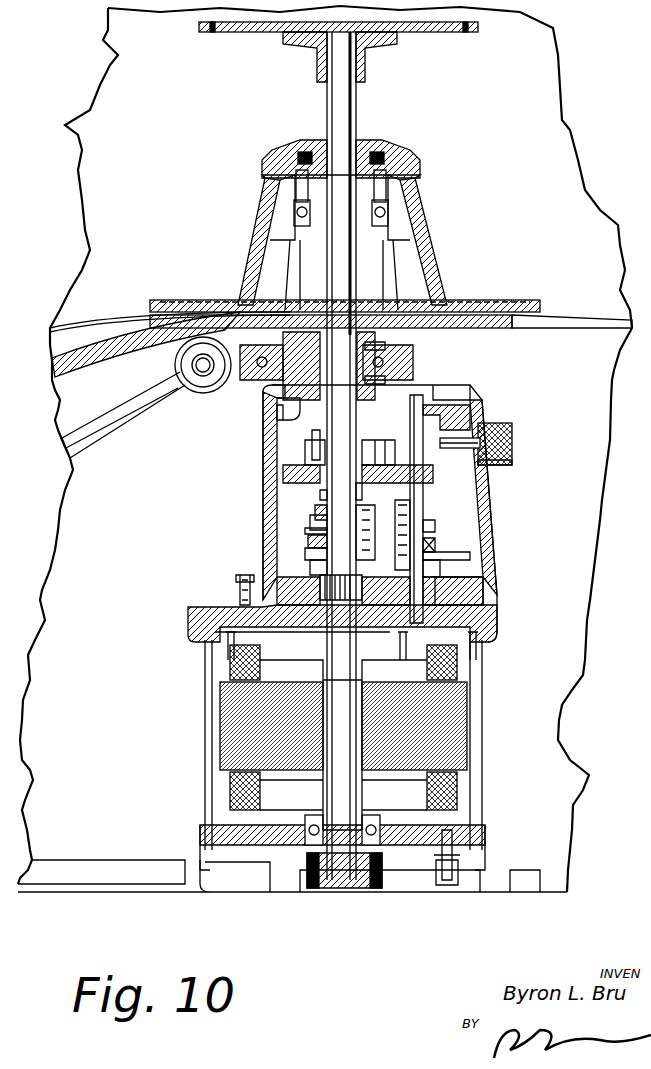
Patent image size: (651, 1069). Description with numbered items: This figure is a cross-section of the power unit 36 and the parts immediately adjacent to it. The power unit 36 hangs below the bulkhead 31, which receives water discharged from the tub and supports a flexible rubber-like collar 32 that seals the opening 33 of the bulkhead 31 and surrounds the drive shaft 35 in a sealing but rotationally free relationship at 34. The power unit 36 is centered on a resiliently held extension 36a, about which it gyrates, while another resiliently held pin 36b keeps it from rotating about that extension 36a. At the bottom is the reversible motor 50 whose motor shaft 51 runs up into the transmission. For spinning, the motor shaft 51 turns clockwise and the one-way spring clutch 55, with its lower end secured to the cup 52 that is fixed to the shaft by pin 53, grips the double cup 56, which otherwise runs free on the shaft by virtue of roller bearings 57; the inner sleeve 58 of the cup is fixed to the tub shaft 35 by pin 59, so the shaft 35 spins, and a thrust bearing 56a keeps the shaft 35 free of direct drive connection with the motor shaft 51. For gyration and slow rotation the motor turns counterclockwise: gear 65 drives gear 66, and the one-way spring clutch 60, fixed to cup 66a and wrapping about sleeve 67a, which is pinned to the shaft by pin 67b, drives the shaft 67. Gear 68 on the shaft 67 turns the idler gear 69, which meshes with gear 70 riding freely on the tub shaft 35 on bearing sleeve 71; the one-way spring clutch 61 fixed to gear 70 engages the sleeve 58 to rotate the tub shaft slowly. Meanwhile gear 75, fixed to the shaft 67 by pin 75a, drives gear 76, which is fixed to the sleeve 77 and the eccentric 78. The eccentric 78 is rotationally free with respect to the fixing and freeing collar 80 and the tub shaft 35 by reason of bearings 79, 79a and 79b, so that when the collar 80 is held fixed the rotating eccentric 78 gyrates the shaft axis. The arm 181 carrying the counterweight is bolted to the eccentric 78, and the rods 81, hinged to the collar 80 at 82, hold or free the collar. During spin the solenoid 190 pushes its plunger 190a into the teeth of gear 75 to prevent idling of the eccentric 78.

The bulkhead 31 is at (80, 327).
The flexible rubber-like collar 32 is at (437, 268).
The opening 33 is at (474, 323).
The sealing rotationally free relationship 34 is at (372, 140).
The drive shaft 35 is at (355, 296).
The power unit 36 is at (490, 538).
The resiliently held extension 36a is at (342, 885).
The resiliently held pin 36b is at (447, 887).
The reversible motor 50 is at (420, 793).
The motor shaft 51 is at (350, 793).
The cup 52 is at (322, 561).
The pin 53 is at (338, 580).
The one-way spring clutch 55 is at (322, 520).
The double cup 56 is at (322, 538).
The thrust bearing 56a is at (322, 528).
The roller bearings 57 is at (322, 548).
The inner sleeve 58 is at (322, 511).
The pin 59 is at (365, 518).
The one-way spring clutch 60 is at (432, 554).
The one-way spring clutch 61 is at (322, 493).
The gear 65 is at (245, 598).
The gear 66 is at (470, 583).
The cup 66a is at (437, 568).
The shaft 67 is at (420, 510).
The sleeve 67a is at (432, 526).
The pin 67b is at (432, 543).
The gear 68 is at (420, 478).
The idler gear 69 is at (385, 443).
The gear 70 is at (290, 473).
The bearing sleeve 71 is at (350, 486).
The gear 75 is at (418, 423).
The pin 75a is at (435, 403).
The gear 76 is at (318, 443).
The sleeve 77 is at (320, 430).
The eccentric 78 is at (290, 378).
The bearing 79 is at (322, 450).
The bearing 79a is at (380, 368).
The bearing 79b is at (380, 353).
The fixing and freeing collar 80 is at (405, 356).
The rod 81 is at (105, 425).
The hinge 82 is at (205, 372).
The arm 181 is at (90, 353).
The solenoid 190 is at (495, 433).
The plunger 190a is at (500, 461).